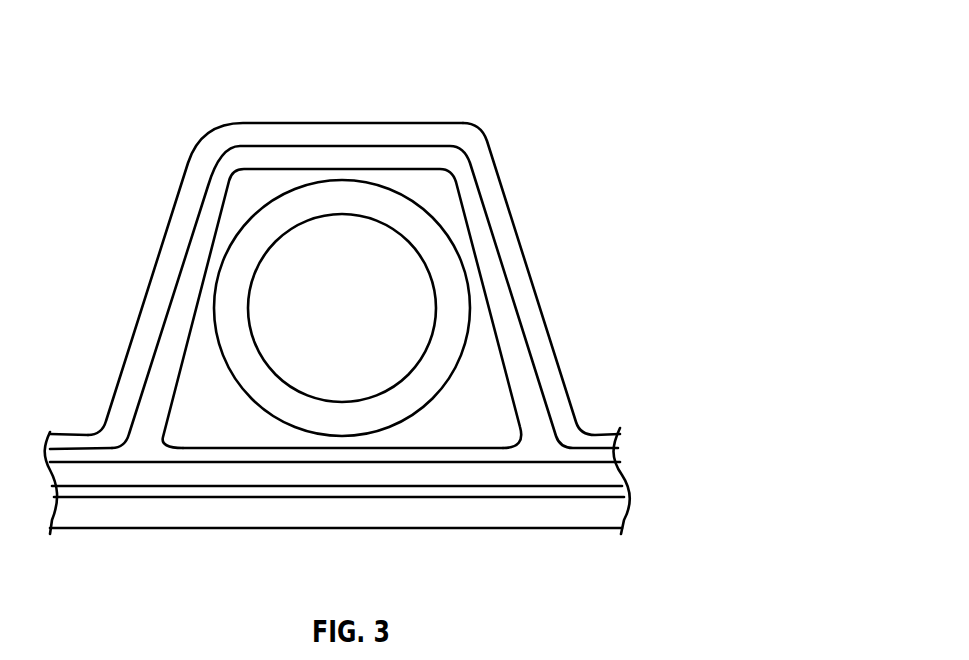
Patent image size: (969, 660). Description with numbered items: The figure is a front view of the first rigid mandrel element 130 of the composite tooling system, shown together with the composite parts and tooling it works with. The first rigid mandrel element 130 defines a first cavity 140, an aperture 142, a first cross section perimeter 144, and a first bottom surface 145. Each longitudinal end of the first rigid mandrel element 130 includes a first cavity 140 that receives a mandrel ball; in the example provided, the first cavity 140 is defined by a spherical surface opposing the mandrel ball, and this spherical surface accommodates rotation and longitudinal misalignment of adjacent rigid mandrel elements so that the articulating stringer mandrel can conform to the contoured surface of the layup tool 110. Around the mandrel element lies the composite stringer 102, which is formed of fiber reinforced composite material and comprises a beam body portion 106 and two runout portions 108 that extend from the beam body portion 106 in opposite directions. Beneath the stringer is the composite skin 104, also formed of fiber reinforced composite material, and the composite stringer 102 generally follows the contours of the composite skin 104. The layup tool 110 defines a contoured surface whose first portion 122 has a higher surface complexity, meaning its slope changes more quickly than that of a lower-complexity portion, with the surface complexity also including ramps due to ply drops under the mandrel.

The first rigid mandrel element 130 is at (570, 44).
The composite stringer 102 is at (263, 137).
The beam body portion 106 is at (495, 162).
The first cross section perimeter 144 is at (495, 328).
The first bottom surface 145 is at (207, 452).
The first cavity 140 is at (360, 192).
The aperture 142 is at (437, 288).
The runout portions 108 is at (72, 431).
The composite skin 104 is at (565, 468).
The first portion 122 is at (323, 497).
The layup tool 110 is at (633, 500).